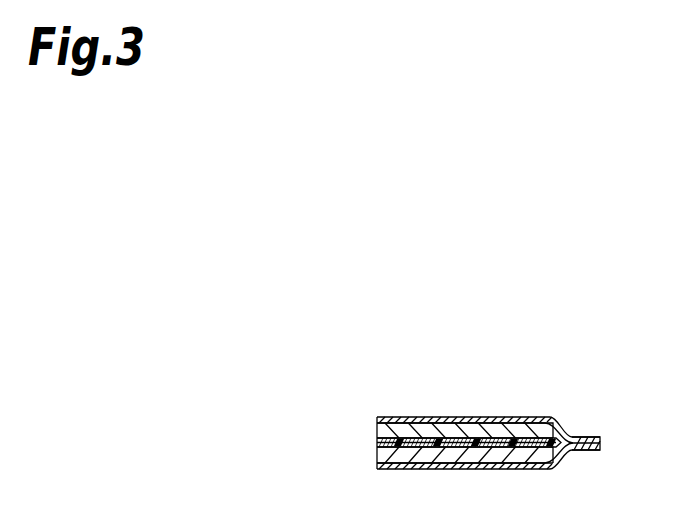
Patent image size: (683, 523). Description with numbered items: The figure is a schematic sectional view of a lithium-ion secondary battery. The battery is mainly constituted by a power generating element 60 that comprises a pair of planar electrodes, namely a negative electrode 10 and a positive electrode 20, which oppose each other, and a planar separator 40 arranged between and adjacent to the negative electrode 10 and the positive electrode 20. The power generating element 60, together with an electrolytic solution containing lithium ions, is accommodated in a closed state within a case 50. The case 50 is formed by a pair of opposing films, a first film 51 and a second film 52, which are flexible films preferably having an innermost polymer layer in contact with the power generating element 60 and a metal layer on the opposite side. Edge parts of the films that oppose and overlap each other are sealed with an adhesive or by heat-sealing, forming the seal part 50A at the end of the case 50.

The negative electrode 10 is at (380, 430).
The positive electrode 20 is at (380, 456).
The separator 40 is at (380, 443).
The power generating element 60 is at (308, 392).
The case 50 is at (530, 362).
The first film 51 is at (458, 417).
The second film 52 is at (498, 465).
The seal part 50A is at (587, 437).